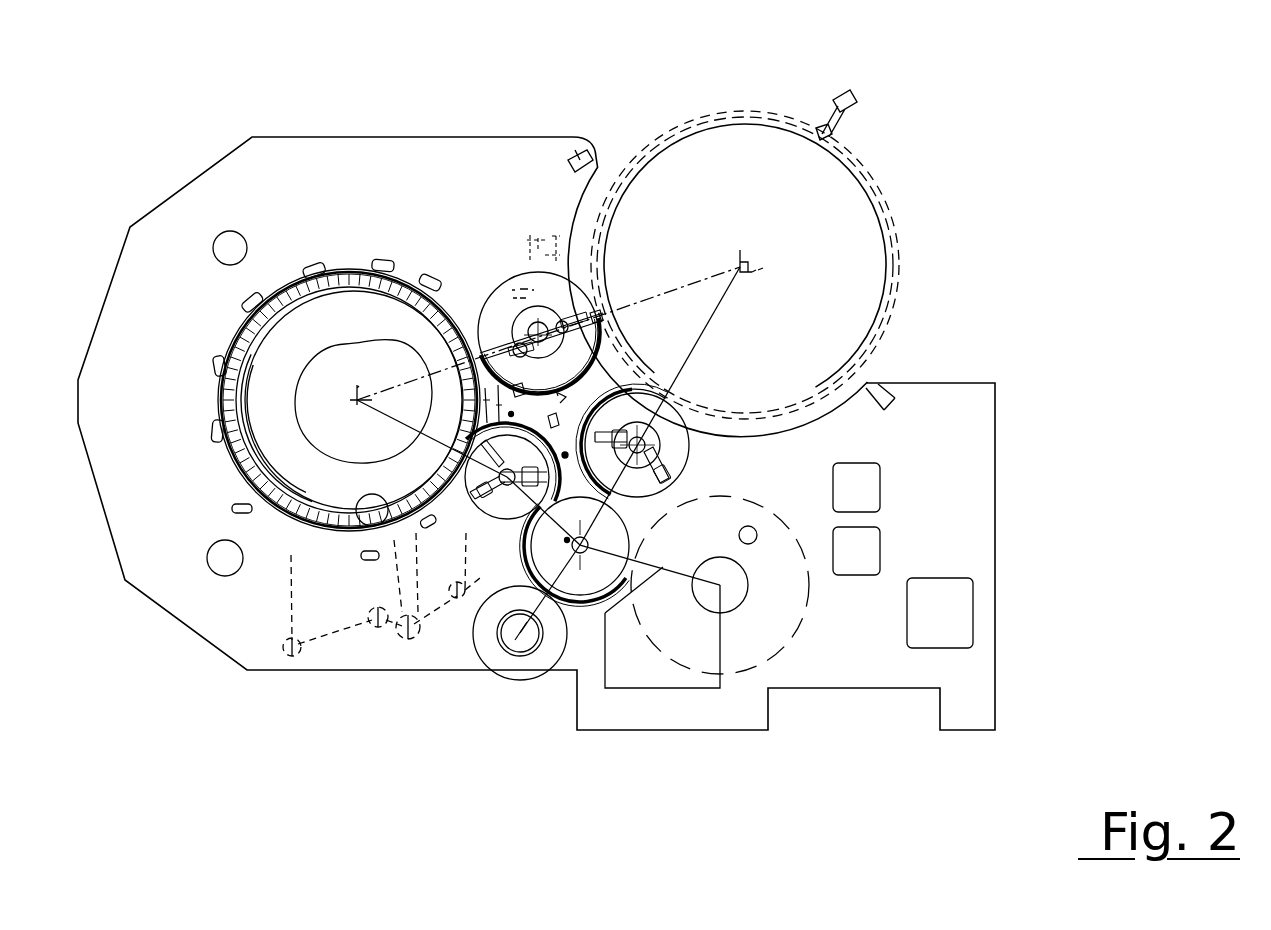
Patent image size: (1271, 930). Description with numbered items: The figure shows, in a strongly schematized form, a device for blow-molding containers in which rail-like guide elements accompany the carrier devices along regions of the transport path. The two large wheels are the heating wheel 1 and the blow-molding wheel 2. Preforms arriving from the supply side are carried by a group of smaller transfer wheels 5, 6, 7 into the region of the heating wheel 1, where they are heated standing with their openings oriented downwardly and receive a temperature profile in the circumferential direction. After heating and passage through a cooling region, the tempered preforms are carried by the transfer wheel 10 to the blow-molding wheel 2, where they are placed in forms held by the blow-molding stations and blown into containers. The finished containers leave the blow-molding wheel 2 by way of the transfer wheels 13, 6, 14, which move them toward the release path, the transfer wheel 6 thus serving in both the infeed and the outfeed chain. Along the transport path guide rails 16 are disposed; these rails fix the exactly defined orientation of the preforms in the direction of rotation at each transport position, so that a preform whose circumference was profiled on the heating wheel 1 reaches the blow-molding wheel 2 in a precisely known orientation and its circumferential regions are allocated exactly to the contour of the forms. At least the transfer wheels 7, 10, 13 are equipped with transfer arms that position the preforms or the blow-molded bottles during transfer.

The heating wheel 1 is at (355, 310).
The blow-molding wheel 2 is at (718, 153).
The transfer wheel 5 is at (521, 648).
The transfer wheel 6 is at (583, 590).
The transfer wheel 7 is at (493, 513).
The transfer wheel 10 is at (541, 390).
The transfer wheel 13 is at (652, 463).
The transfer wheel 14 is at (735, 600).
The guide rails 16 is at (545, 397).